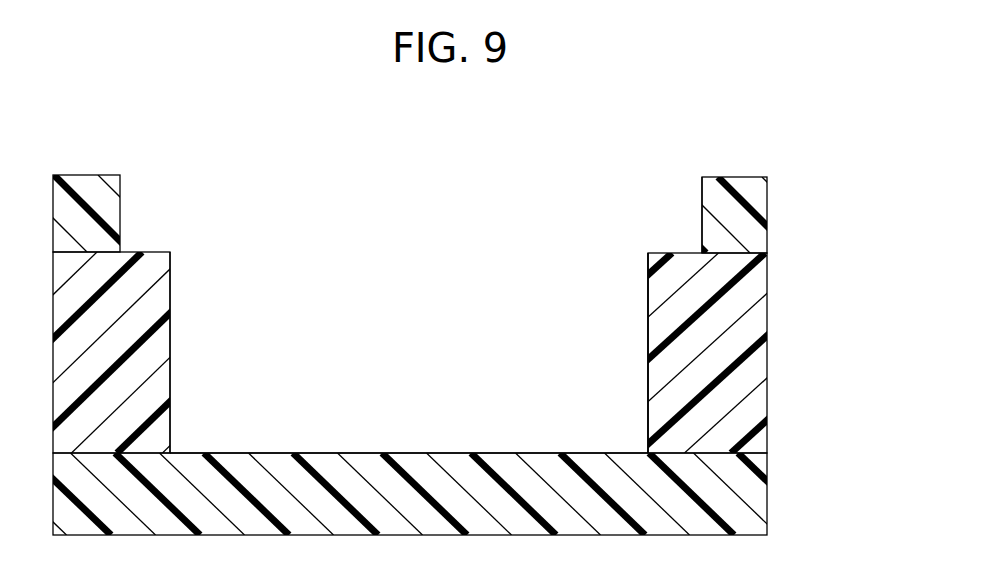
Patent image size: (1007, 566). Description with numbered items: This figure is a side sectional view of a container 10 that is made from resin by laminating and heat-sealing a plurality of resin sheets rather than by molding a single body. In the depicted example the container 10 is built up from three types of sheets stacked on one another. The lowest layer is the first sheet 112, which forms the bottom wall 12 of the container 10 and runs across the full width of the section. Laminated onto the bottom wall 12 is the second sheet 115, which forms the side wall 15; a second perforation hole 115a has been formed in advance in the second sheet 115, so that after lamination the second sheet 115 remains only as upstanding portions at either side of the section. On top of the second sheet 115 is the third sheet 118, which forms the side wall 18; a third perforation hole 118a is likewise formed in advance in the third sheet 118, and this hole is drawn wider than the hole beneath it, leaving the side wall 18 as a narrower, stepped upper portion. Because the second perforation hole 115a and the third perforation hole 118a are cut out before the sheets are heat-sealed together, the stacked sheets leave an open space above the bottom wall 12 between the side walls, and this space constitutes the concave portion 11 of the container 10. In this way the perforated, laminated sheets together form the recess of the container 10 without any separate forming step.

The container 10 is at (75, 128).
The concave portion 11 is at (414, 236).
The bottom wall 12 is at (441, 494).
The first sheet 112 is at (755, 487).
The side wall 15 is at (475, 352).
The second sheet 115 is at (753, 351).
The second perforation hole 115a is at (648, 352).
The side wall 18 is at (446, 214).
The third sheet 118 is at (760, 210).
The third perforation hole 118a is at (703, 217).